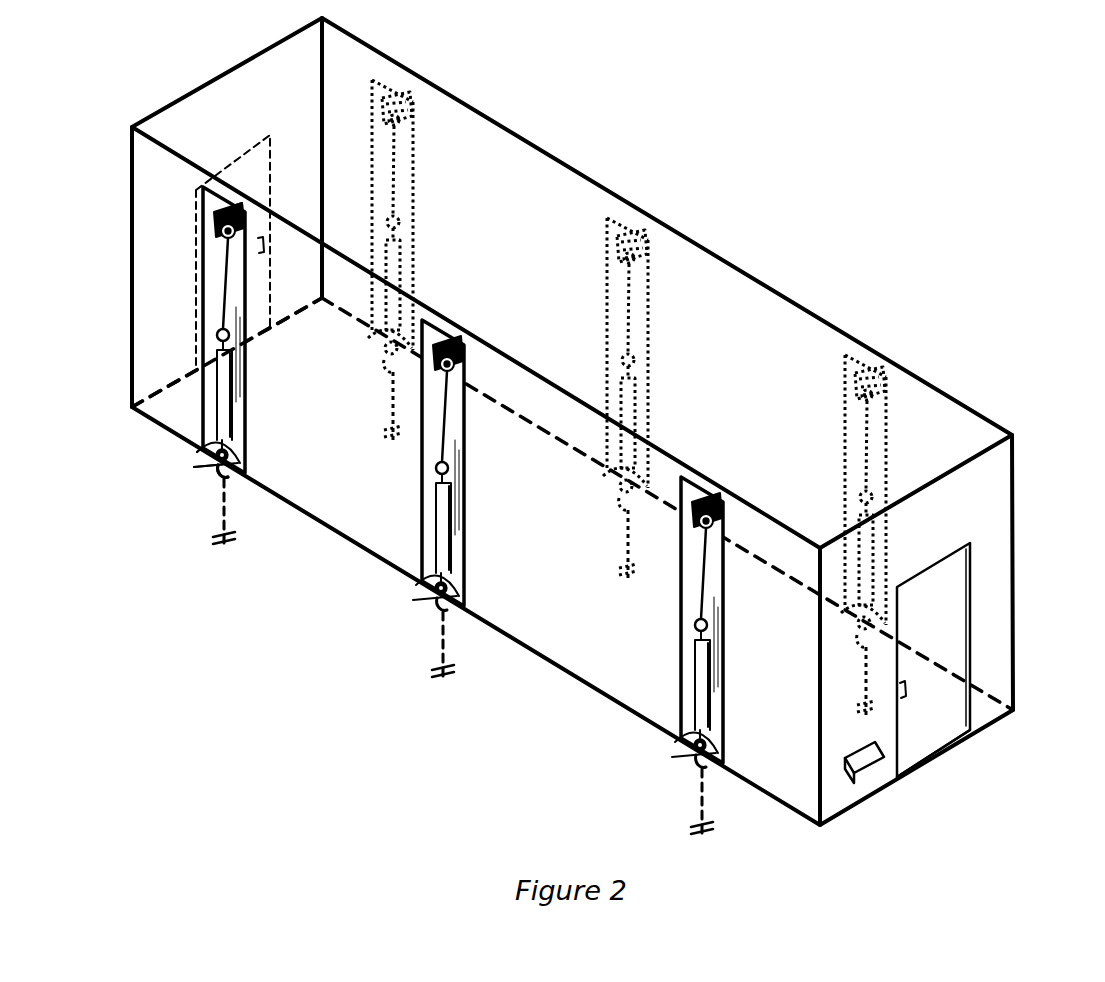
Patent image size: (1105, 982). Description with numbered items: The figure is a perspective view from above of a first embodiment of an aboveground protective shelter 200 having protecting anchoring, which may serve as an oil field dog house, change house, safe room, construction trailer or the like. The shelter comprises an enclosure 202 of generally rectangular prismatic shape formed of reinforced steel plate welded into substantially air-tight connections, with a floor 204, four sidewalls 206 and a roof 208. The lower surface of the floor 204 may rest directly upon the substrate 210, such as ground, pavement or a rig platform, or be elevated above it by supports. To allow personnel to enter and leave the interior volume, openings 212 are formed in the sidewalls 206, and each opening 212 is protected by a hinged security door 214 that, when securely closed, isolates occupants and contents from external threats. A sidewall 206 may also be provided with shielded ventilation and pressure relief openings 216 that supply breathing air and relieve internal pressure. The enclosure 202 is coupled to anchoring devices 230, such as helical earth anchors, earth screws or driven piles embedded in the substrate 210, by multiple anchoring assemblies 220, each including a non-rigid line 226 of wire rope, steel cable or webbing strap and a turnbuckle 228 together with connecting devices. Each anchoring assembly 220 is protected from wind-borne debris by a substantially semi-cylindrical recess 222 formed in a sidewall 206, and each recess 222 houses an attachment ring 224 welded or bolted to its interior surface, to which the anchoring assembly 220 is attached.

The protective shelter 200 is at (842, 139).
The enclosure 202 is at (575, 421).
The floor 204 is at (340, 431).
The sidewalls 206 is at (155, 172).
The roof 208 is at (790, 325).
The substrate 210 is at (255, 686).
The openings 212 is at (968, 648).
The hinged security door 214 is at (912, 746).
The shielded ventilation and pressure relief openings 216 is at (870, 771).
The anchoring assemblies 220 is at (195, 450).
The recesses 222 is at (426, 468).
The attachment ring 224 is at (474, 315).
The non-rigid line 226 is at (496, 424).
The turnbuckle 228 is at (496, 512).
The anchoring devices 230 is at (408, 626).